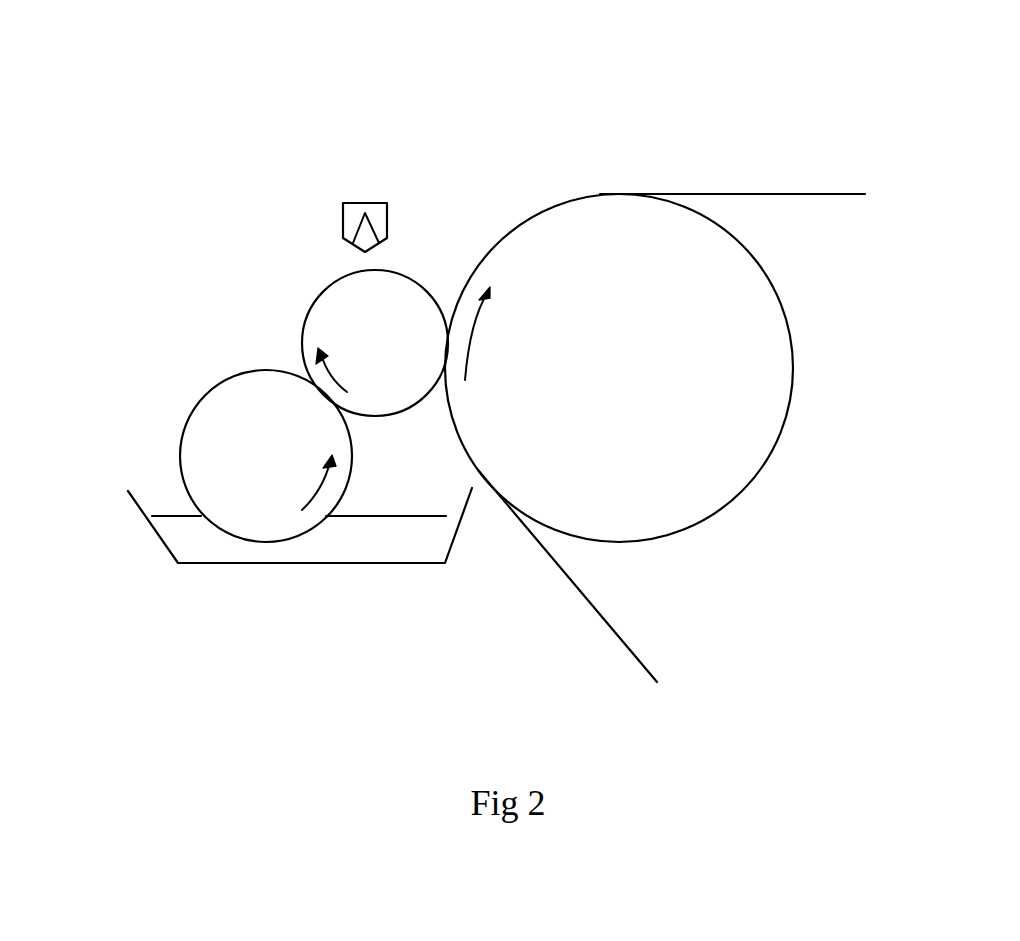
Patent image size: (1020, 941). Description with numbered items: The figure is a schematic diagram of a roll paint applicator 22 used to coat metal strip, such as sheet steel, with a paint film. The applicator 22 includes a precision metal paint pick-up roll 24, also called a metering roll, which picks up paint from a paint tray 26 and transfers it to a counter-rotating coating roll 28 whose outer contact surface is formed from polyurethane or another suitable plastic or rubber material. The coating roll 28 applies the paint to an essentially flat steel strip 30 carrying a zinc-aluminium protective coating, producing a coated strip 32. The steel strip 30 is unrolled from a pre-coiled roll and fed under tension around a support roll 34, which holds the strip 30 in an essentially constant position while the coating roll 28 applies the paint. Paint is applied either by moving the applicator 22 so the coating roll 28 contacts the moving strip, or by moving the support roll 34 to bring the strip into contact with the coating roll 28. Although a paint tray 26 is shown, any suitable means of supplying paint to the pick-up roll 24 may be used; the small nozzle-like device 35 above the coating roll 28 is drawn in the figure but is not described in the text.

The roll paint applicator 22 is at (547, 158).
The paint pick-up roll 24 is at (197, 452).
The paint tray 26 is at (413, 545).
The coating roll 28 is at (385, 300).
The steel strip 30 is at (623, 647).
The coated strip 32 is at (762, 194).
The support roll 34 is at (695, 477).
The nozzle / discharge device 35 is at (356, 203).